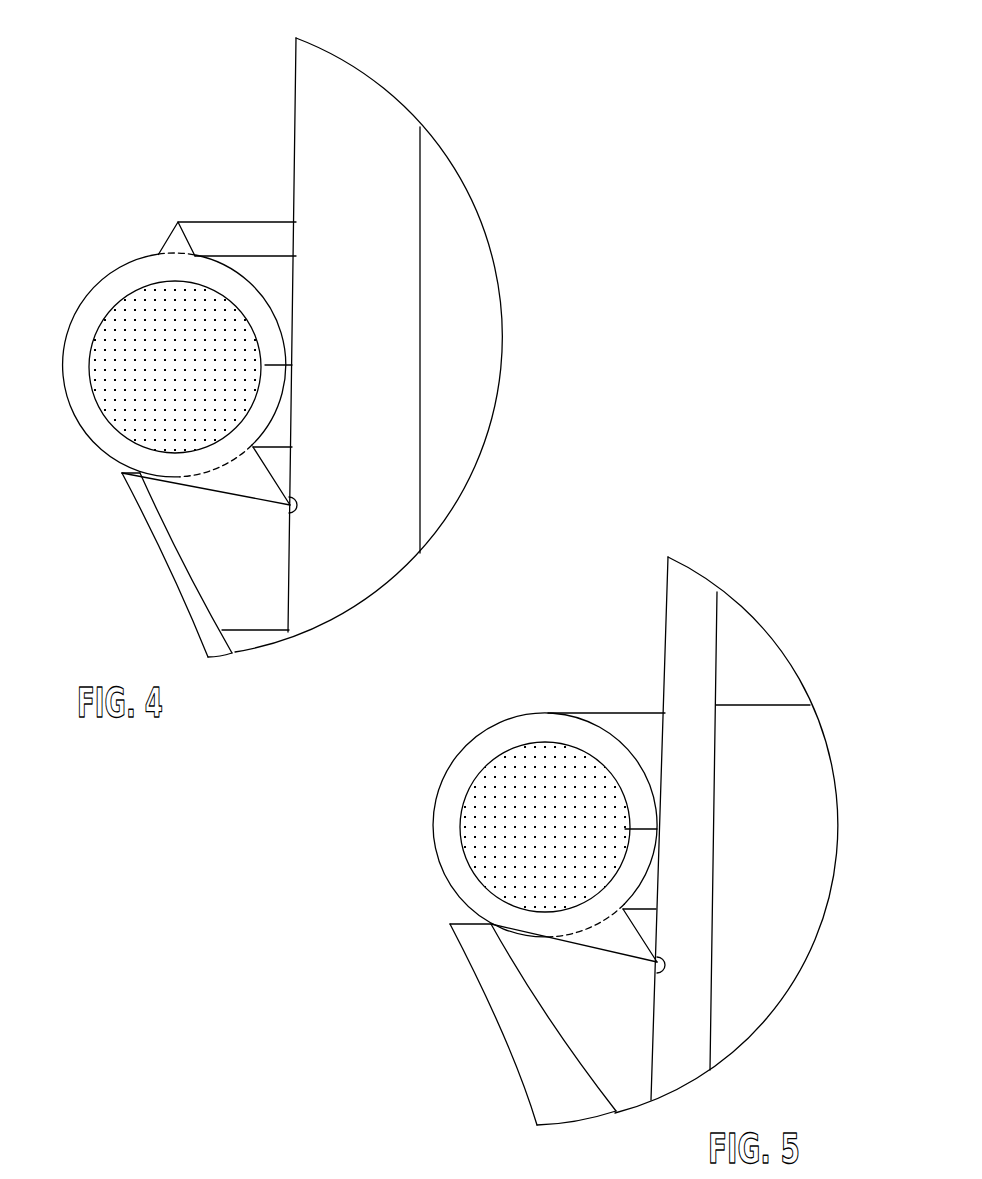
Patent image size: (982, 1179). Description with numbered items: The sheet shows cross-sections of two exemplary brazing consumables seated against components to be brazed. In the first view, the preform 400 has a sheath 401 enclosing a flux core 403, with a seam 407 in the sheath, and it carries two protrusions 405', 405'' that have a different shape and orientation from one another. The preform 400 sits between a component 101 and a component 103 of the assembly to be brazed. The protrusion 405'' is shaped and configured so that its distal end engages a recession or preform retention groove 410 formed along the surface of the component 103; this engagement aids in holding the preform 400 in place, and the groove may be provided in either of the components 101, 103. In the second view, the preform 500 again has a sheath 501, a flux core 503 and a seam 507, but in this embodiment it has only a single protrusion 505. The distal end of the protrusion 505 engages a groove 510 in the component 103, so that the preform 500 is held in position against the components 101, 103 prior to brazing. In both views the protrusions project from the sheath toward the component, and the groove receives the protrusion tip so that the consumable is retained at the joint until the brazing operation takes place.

In FIG. 4, the component 101 is at (177, 582).
In FIG. 5, the component 101 is at (485, 1002).
In FIG. 4, the component 103 is at (377, 82).
In FIG. 5, the component 103 is at (693, 583).
In FIG. 4, the preform 400 is at (163, 318).
In FIG. 4, the sheath 401 is at (112, 271).
In FIG. 4, the flux core 403 is at (130, 352).
In FIG. 4, the protrusion 405' is at (226, 202).
In FIG. 4, the protrusion 405'' is at (188, 500).
In FIG. 4, the seam 407 is at (275, 366).
In FIG. 4, the preform retention groove 410 is at (294, 503).
In FIG. 5, the preform 500 is at (597, 839).
In FIG. 5, the sheath 501 is at (519, 713).
In FIG. 5, the flux core 503 is at (500, 821).
In FIG. 5, the protrusion 505 is at (623, 943).
In FIG. 5, the seam 507 is at (645, 833).
In FIG. 5, the grooves 510 is at (664, 967).